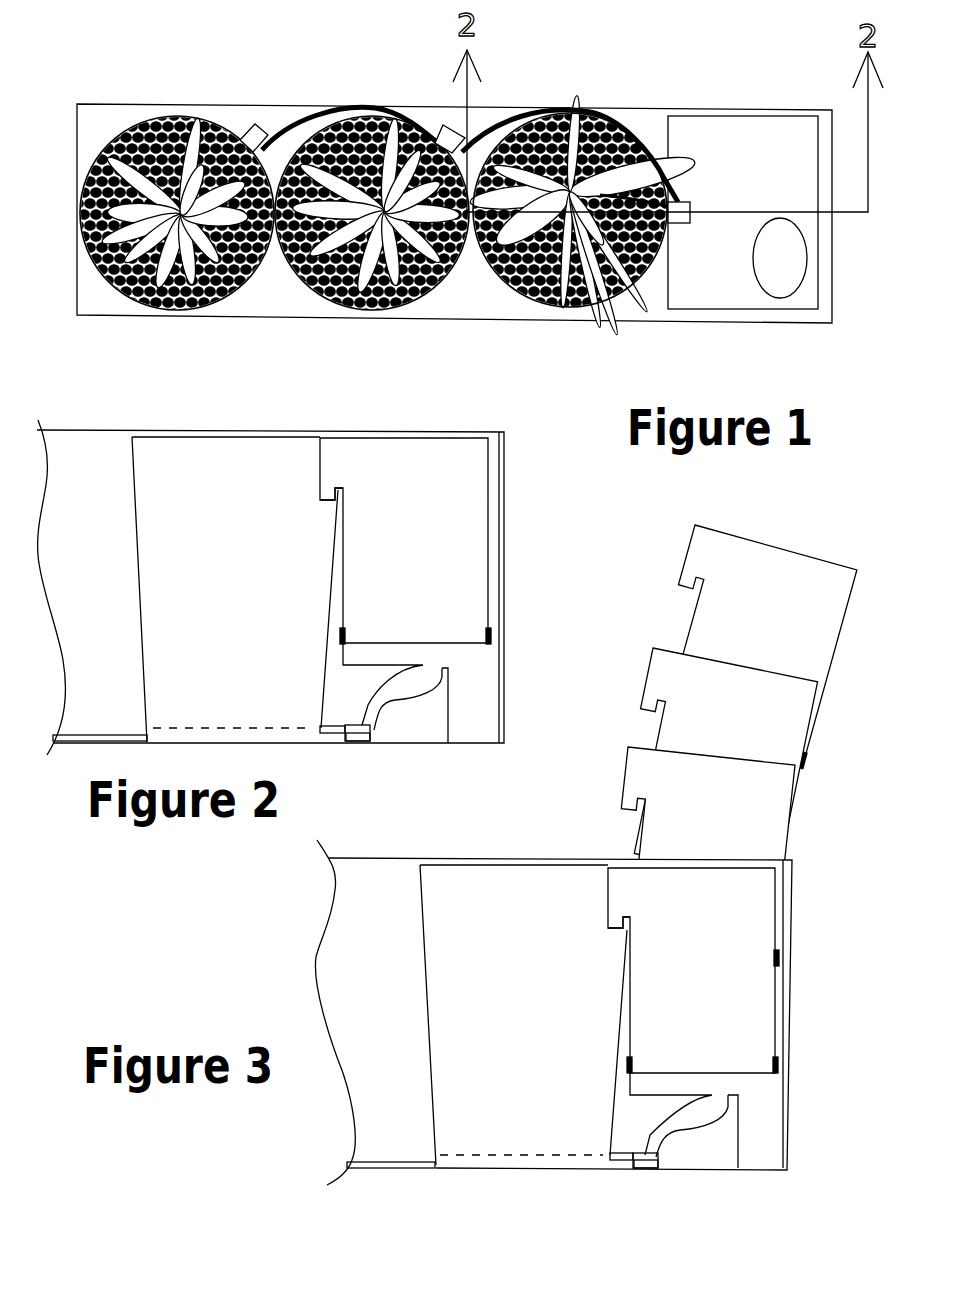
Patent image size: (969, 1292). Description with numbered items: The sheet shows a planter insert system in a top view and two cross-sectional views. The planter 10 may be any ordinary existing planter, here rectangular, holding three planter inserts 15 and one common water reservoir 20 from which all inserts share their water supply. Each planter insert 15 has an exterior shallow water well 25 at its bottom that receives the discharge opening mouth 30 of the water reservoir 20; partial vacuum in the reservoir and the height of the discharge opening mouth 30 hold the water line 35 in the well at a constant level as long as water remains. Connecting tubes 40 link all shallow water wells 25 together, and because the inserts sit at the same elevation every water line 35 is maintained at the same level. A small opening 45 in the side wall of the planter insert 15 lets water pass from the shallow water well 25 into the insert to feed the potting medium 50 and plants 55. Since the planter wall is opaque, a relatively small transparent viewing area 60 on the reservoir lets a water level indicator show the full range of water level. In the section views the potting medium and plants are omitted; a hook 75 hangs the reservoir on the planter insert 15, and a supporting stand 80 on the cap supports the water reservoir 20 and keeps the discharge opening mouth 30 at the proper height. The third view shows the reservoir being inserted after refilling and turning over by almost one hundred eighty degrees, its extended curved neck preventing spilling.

In FIG. 1, the planter 10 is at (104, 102).
In FIG. 2, the planter 10 is at (504, 470).
In FIG. 3, the planter 10 is at (793, 982).
In FIG. 1, the planter insert 15 is at (142, 302).
In FIG. 2, the planter insert 15 is at (132, 510).
In FIG. 3, the planter insert 15 is at (425, 963).
In FIG. 1, the water reservoir 20 is at (713, 313).
In FIG. 2, the water reservoir 20 is at (488, 533).
In FIG. 3, the water reservoir 20 is at (763, 543).
In FIG. 1, the shallow water well 25 is at (253, 125).
In FIG. 2, the shallow water well 25 is at (375, 735).
In FIG. 3, the shallow water well 25 is at (665, 1163).
In FIG. 2, the discharge opening mouth 30 is at (353, 743).
In FIG. 3, the discharge opening mouth 30 is at (633, 1168).
In FIG. 2, the water line 35 is at (222, 725).
In FIG. 3, the water line 35 is at (510, 1153).
In FIG. 1, the connecting tube 40 is at (318, 127).
In FIG. 2, the connecting tube 40 is at (119, 732).
In FIG. 3, the connecting tube 40 is at (400, 1168).
In FIG. 2, the small opening 45 is at (318, 733).
In FIG. 3, the small opening 45 is at (603, 1160).
In FIG. 1, the potting medium 50 is at (115, 136).
In FIG. 1, the plants 55 is at (88, 253).
In FIG. 1, the transparent viewing area 60 is at (800, 290).
In FIG. 2, the hook 75 is at (318, 493).
In FIG. 3, the hook 75 is at (603, 920).
In FIG. 2, the supporting stand 80 is at (493, 722).
In FIG. 3, the supporting stand 80 is at (782, 1142).